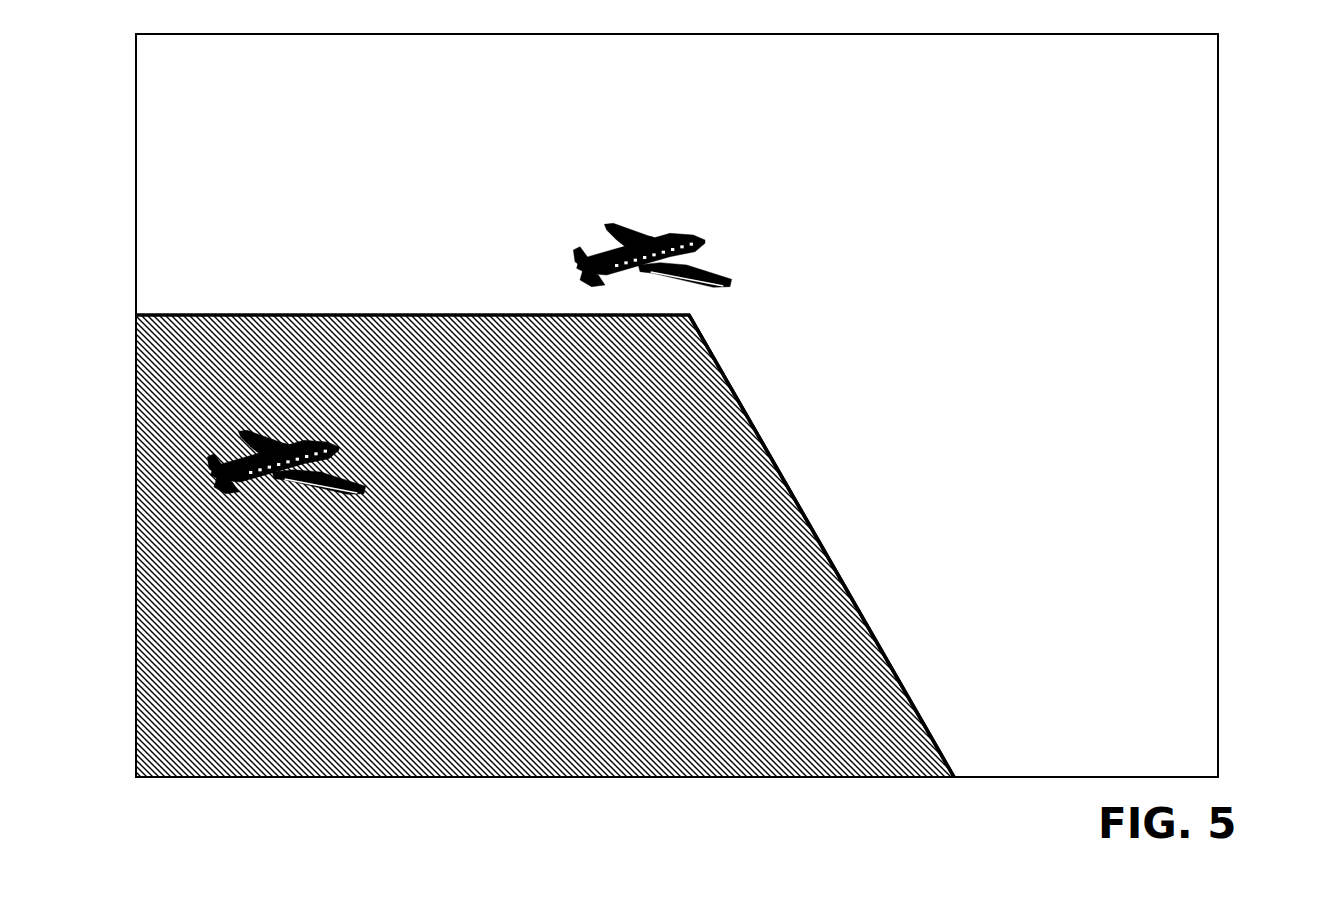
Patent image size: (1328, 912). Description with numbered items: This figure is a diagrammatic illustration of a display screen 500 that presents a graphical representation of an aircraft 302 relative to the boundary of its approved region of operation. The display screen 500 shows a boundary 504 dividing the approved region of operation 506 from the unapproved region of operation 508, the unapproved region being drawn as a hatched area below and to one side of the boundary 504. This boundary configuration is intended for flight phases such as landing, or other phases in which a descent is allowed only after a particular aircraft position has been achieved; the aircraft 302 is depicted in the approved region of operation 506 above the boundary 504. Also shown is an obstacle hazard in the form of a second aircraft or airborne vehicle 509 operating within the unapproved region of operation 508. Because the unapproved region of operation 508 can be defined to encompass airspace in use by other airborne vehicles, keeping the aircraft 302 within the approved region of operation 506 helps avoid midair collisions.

The display screen 500 is at (1218, 173).
The approved region of operation 506 is at (1147, 287).
The unapproved region of operation 508 is at (607, 747).
The boundary 504 is at (733, 388).
The aircraft 302 is at (700, 238).
The second aircraft or airborne vehicle 509 is at (275, 450).